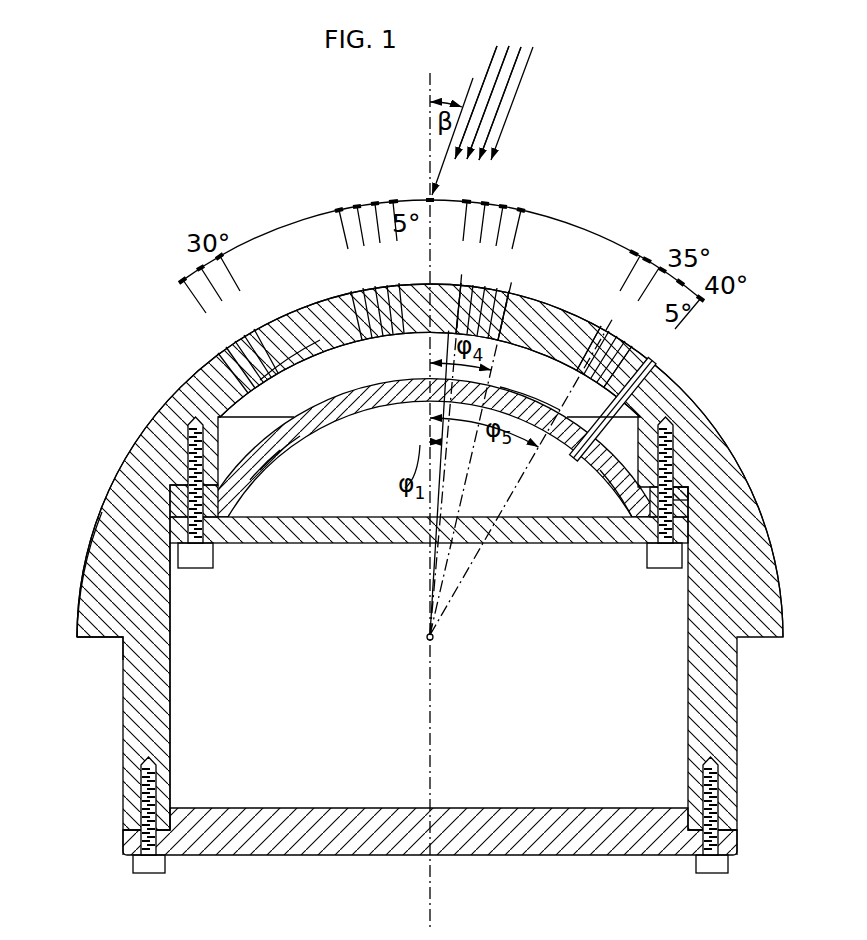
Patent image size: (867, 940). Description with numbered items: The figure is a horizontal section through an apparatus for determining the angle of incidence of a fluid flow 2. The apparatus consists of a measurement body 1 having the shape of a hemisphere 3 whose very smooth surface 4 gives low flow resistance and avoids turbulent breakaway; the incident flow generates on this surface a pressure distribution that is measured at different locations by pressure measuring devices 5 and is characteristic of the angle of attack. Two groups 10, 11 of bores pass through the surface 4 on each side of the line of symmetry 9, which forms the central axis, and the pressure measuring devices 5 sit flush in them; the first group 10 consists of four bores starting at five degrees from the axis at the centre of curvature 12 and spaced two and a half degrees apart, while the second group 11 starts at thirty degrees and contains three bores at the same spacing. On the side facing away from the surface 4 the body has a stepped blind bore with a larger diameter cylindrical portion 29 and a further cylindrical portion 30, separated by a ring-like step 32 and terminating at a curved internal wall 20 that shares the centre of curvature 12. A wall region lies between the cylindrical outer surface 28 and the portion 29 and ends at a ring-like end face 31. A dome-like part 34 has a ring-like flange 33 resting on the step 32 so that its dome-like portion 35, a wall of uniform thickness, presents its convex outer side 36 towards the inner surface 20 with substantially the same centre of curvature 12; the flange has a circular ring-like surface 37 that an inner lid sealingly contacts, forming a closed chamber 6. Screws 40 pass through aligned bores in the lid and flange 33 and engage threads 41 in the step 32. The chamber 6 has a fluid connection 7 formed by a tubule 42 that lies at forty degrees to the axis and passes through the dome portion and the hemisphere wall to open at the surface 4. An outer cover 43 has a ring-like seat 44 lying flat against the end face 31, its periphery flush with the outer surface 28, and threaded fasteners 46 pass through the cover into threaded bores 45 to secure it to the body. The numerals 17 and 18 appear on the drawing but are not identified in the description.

The measurement body 1 is at (771, 640).
The fluid flow 2 is at (514, 97).
The hemisphere 3 is at (150, 395).
The surface 4 is at (569, 313).
The pressure measuring devices 5 is at (240, 333).
The closed chamber 6 is at (487, 473).
The fluid connection 7 is at (600, 425).
The line of symmetry 9 is at (433, 907).
The first group of bores 10 is at (500, 278).
The second group of bores 11 is at (612, 318).
The centre of curvature 12 is at (434, 642).
The outer surface 17 is at (73, 608).
The shoulder 18 is at (83, 644).
The curved internal wall 20 is at (302, 362).
The cylindrical outer surface 28 is at (127, 790).
The larger diameter cylindrical portion of the blind bore 29 is at (172, 688).
The cylindrical portion of the blind bore 30 is at (220, 463).
The ring-like end face 31 is at (738, 835).
The ring-like step 32 is at (690, 500).
The ring-like flange 33 is at (689, 514).
The dome-like part 34 is at (260, 488).
The dome-like portion 35 is at (343, 414).
The convex outer side 36 is at (520, 397).
The circular ring-like surface 37 is at (640, 518).
The screws 40 is at (213, 560).
The threads 41 is at (674, 455).
The tubule 42 is at (657, 362).
The outer cover 43 is at (532, 860).
The ring-like seat 44 is at (126, 835).
The threaded bores 45 is at (722, 801).
The threaded fasteners 46 is at (730, 871).